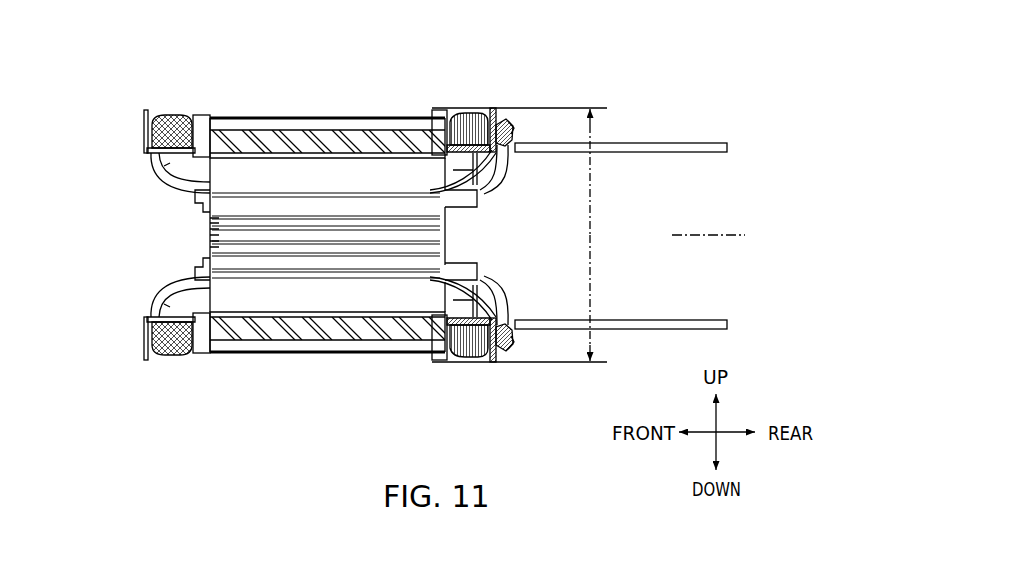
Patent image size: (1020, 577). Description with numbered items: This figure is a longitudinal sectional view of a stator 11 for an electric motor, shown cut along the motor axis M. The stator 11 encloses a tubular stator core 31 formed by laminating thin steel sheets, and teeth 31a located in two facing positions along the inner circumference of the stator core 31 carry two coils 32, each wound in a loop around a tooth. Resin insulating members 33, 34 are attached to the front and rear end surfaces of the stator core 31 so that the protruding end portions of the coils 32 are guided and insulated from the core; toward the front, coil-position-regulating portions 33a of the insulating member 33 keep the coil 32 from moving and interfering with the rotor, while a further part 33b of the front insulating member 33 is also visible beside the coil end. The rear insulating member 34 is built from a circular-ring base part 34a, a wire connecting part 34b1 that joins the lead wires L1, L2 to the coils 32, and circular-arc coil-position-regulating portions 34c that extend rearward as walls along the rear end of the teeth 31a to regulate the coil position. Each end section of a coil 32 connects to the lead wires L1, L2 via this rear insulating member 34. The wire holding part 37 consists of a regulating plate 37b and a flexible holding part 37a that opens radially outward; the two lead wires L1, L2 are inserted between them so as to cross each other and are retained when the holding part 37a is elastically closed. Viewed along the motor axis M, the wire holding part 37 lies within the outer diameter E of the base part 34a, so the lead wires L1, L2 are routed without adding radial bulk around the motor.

The stator 11 is at (345, 96).
The stator core 31 is at (297, 128).
The teeth 31a is at (202, 206).
The coil 32 is at (187, 116).
The insulating member 33 is at (203, 127).
The coil-position-regulating portion 33a is at (190, 168).
The insulator wall 33b is at (143, 121).
The insulating member 34 is at (440, 106).
The base part 34a is at (437, 364).
The wire connecting part 34b1 is at (477, 261).
The coil-position-regulating portion 34c is at (498, 165).
The wire holding part 37 is at (513, 112).
The holding part 37a is at (516, 128).
The regulating plate 37b is at (493, 118).
The lead wire L1 is at (510, 177).
The lead wire L2 is at (692, 142).
The outer diameter E is at (519, 235).
The motor axis M is at (718, 236).